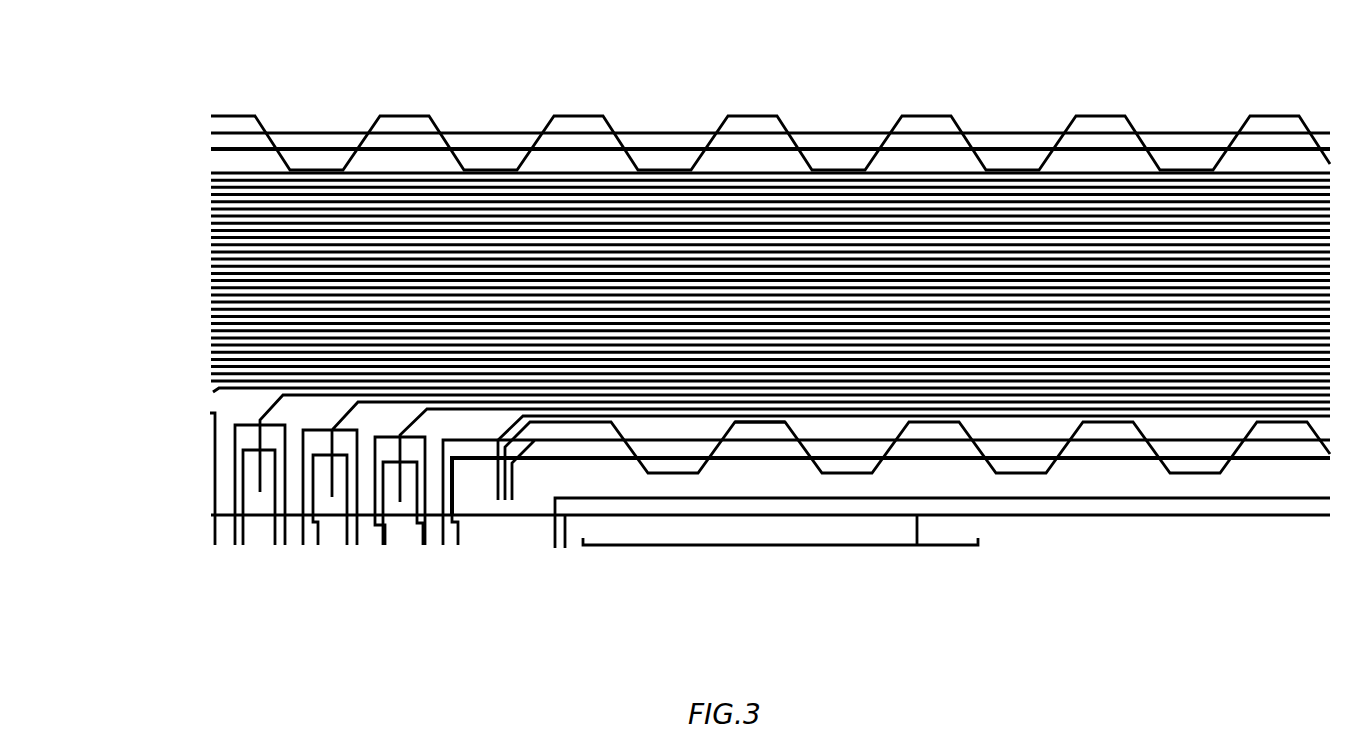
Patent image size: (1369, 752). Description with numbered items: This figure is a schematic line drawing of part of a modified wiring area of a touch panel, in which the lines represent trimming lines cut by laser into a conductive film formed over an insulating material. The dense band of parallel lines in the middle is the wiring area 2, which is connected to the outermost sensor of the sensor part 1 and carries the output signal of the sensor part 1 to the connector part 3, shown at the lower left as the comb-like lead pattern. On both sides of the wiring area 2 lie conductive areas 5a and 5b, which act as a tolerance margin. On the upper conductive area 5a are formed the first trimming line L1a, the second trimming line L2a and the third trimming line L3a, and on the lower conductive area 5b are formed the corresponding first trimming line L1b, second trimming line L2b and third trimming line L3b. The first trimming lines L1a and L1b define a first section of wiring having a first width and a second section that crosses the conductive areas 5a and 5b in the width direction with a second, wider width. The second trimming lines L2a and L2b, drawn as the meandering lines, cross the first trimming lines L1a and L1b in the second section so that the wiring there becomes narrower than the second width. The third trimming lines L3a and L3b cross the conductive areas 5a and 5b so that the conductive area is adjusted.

The sensor part 1 is at (966, 546).
The wiring area 2 is at (210, 262).
The connector part 3 is at (327, 530).
The conductive area 5a is at (1280, 166).
The conductive area 5b is at (605, 430).
The first trimming line L1a is at (224, 172).
The second trimming line L2a is at (232, 115).
The third trimming line L3a is at (318, 148).
The first trimming line L1b is at (675, 418).
The second trimming line L2b is at (762, 424).
The third trimming line L3b is at (848, 442).